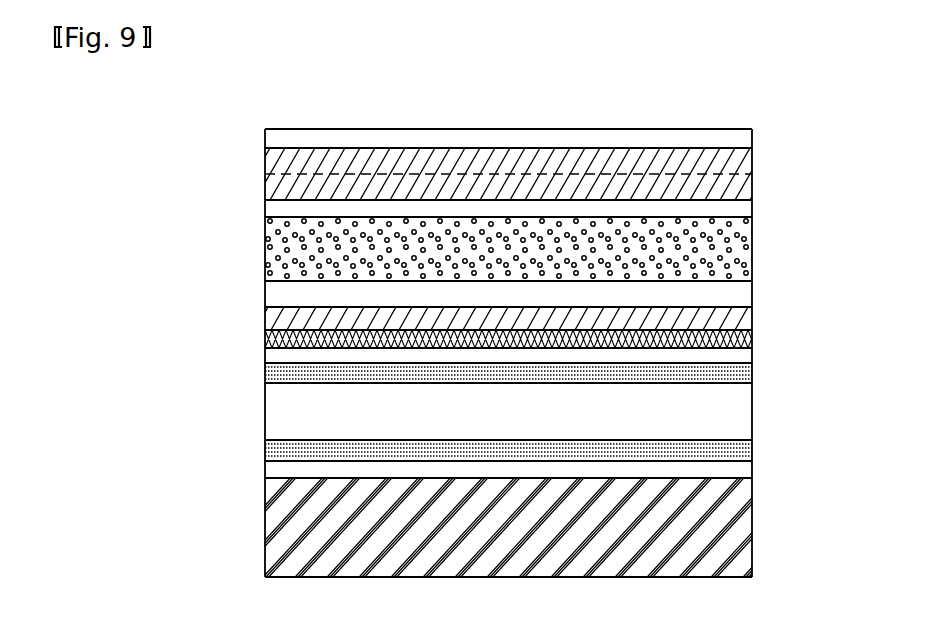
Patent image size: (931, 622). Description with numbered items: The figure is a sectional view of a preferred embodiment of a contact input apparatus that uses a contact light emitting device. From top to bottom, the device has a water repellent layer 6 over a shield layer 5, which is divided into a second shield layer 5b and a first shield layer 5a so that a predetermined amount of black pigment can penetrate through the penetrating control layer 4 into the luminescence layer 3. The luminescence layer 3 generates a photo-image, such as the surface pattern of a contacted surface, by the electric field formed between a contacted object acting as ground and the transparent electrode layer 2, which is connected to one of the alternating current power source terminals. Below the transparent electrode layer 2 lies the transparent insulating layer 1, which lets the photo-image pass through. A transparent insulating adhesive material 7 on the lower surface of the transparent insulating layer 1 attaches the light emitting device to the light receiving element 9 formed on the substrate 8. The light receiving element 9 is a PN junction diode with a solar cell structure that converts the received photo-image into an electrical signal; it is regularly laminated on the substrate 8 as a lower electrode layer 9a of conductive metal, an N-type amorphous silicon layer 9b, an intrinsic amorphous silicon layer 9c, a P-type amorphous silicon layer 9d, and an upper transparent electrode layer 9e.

The transparent insulating layer 1 is at (752, 312).
The transparent electrode layer 2 is at (752, 287).
The luminescence layer 3 is at (752, 243).
The penetrating control layer 4 is at (752, 205).
The shield layer 5 is at (759, 152).
The first shield layer 5a is at (265, 193).
The second shield layer 5b is at (265, 165).
The water repellent layer 6 is at (752, 135).
The transparent insulating adhesive material 7 is at (752, 333).
The substrate 8 is at (752, 523).
The light receiving element 9 is at (764, 345).
The lower electrode layer 9a is at (265, 472).
The N-type amorphous silicon layer 9b is at (265, 454).
The intrinsic amorphous silicon layer 9c is at (267, 412).
The P-type amorphous silicon layer 9d is at (265, 378).
The upper transparent electrode layer 9e is at (265, 356).